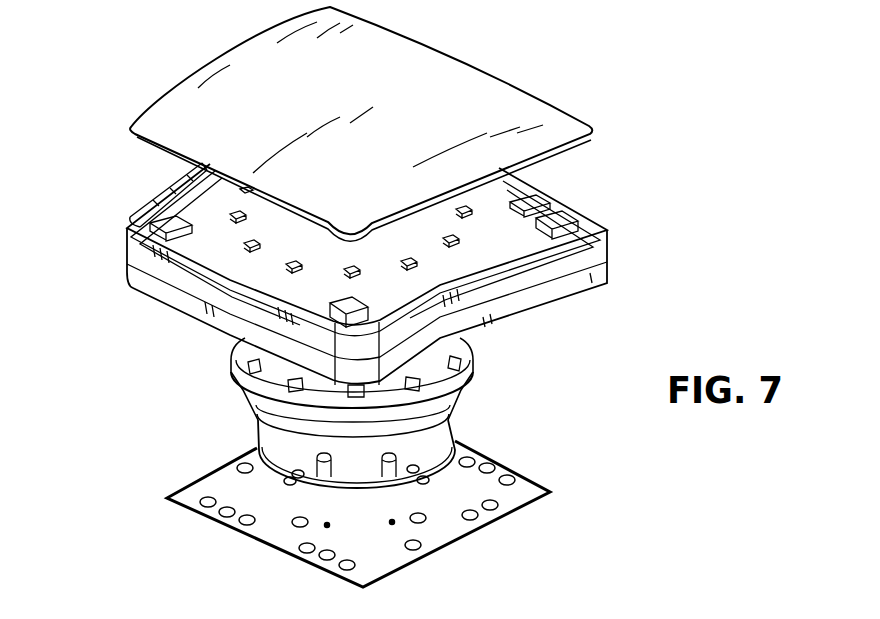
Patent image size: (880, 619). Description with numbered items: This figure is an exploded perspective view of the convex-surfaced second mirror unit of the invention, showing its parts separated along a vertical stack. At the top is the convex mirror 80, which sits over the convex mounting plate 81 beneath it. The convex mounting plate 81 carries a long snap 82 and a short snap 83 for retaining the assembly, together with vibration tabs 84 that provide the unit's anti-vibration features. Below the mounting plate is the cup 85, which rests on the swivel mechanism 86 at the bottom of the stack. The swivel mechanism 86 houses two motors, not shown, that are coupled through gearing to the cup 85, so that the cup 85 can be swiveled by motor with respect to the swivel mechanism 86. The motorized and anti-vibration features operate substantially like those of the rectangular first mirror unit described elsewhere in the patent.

The convex mirror 80 is at (233, 88).
The convex mounting plate 81 is at (165, 288).
The long snap 82 is at (507, 261).
The short snap 83 is at (167, 192).
The vibration tabs 84 is at (130, 225).
The cup 85 is at (253, 370).
The swivel mechanism 86 is at (453, 432).